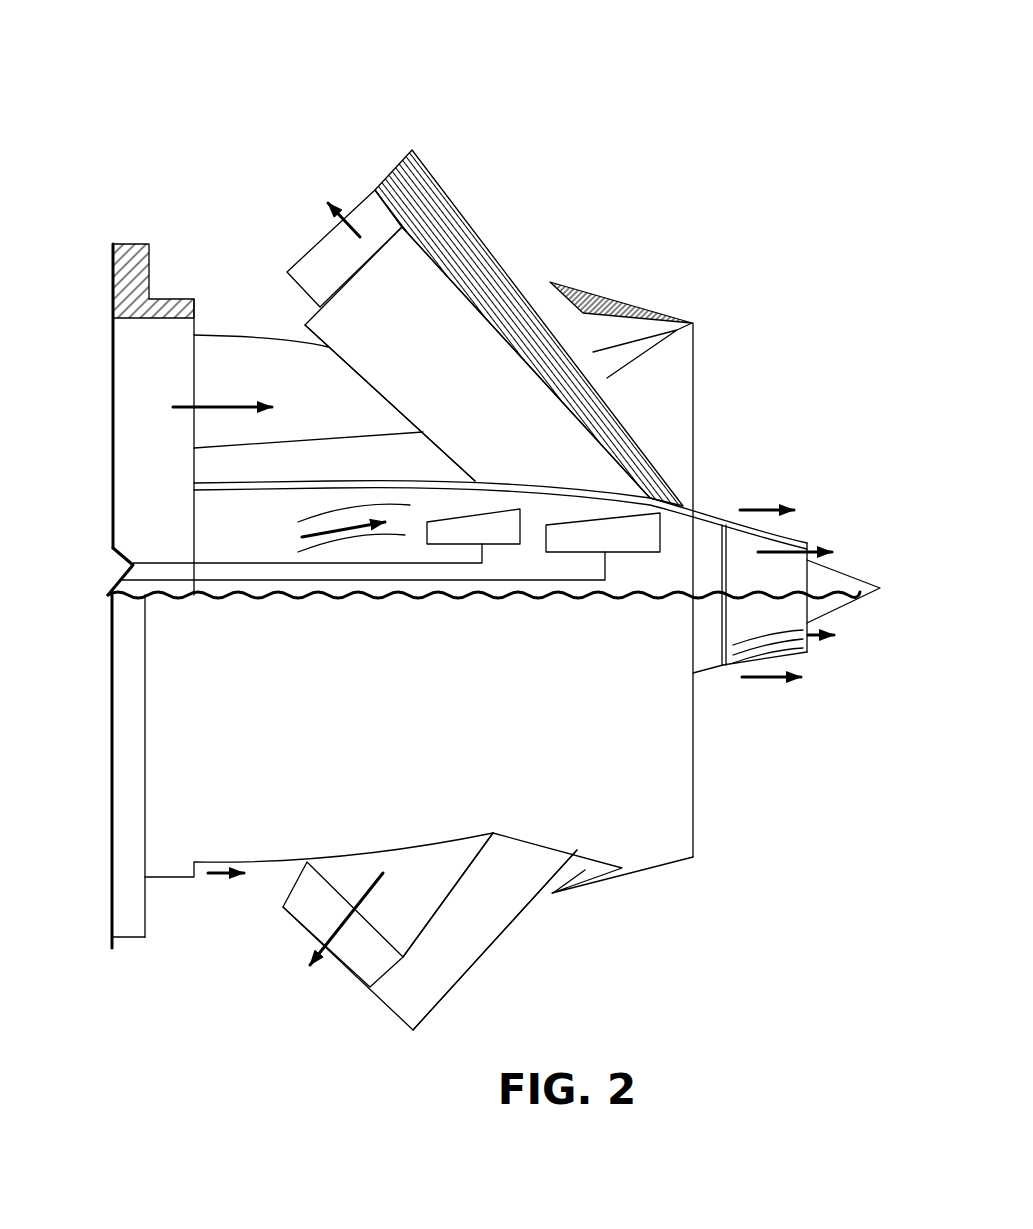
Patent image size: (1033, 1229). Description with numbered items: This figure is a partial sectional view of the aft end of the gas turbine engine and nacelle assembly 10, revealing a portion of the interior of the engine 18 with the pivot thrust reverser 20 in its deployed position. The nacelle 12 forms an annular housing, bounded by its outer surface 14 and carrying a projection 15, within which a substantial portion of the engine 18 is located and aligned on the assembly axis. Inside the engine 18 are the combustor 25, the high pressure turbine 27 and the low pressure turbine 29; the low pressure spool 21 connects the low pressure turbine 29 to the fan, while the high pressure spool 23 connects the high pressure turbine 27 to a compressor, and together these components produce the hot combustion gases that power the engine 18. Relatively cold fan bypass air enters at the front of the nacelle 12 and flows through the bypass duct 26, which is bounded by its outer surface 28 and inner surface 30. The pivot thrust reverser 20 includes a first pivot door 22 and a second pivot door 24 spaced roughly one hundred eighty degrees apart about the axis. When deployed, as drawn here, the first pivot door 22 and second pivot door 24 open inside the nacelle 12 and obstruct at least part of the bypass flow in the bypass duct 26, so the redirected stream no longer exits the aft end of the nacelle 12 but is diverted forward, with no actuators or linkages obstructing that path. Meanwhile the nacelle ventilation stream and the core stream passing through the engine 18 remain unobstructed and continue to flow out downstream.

The gas turbine engine and nacelle assembly 10 is at (146, 150).
The nacelle 12 is at (163, 231).
The outer surface of nacelle 14 is at (670, 365).
The projection of nacelle 15 is at (617, 297).
The engine 18 is at (840, 505).
The pivot thrust reverser 20 is at (542, 230).
The low pressure spool 21 is at (306, 578).
The first pivot door 22 is at (465, 947).
The high pressure spool 23 is at (338, 563).
The second pivot door 24 is at (483, 223).
The combustor 25 is at (387, 542).
The bypass duct 26 is at (207, 790).
The high pressure turbine 27 is at (492, 545).
The outer surface of bypass duct 28 is at (507, 363).
The low pressure turbine 29 is at (640, 533).
The inner surface of bypass duct 30 is at (703, 660).